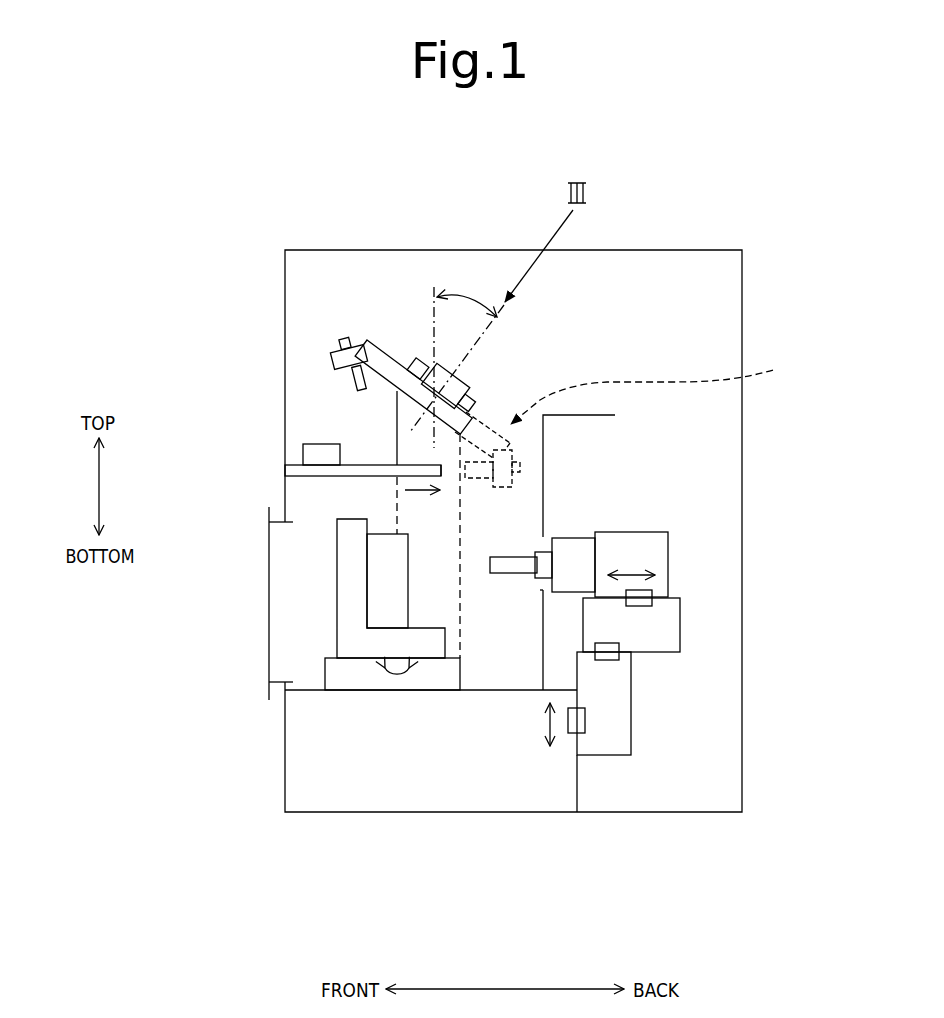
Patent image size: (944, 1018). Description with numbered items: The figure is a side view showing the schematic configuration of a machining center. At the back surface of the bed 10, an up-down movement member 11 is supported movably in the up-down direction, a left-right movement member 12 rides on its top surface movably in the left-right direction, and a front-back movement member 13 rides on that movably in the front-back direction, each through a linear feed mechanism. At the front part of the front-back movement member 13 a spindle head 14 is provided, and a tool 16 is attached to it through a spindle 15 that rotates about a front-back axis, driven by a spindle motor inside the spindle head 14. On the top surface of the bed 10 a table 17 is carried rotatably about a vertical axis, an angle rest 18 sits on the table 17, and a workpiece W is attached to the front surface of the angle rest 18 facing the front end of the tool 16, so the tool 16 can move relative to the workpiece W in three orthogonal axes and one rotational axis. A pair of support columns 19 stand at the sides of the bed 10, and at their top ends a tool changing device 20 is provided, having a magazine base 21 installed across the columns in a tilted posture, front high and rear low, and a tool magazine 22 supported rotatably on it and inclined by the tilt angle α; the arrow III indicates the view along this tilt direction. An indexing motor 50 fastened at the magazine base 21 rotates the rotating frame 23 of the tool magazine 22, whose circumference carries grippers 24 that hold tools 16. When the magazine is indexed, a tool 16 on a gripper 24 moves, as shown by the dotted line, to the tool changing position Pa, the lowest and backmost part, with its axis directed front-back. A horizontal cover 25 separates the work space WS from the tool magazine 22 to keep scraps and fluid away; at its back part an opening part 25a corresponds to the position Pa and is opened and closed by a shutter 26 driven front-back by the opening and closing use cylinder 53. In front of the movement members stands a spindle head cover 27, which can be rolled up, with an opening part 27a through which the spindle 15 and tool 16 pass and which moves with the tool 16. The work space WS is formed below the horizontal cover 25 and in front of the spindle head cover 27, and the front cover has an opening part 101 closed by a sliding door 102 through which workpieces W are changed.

The bed 10 is at (300, 758).
The up-down movement member 11 is at (620, 727).
The left-right movement member 12 is at (665, 630).
The front-back movement member 13 is at (658, 552).
The spindle head 14 is at (545, 553).
The spindle 15 is at (580, 548).
The tool 16 is at (520, 555).
The table 17 is at (333, 675).
The angle rest 18 is at (337, 578).
The support column 19 is at (396, 412).
The tool changing device 20 is at (341, 305).
The magazine base 21 is at (416, 362).
The tool magazine 22 is at (360, 336).
The rotating frame 23 is at (437, 375).
The gripper 24 is at (331, 358).
The horizontal cover 25 is at (298, 478).
The opening part 25a is at (441, 465).
The shutter 26 is at (443, 478).
The spindle head cover 27 is at (543, 620).
The opening part 27a is at (543, 590).
The indexing motor 50 is at (475, 362).
The opening and closing use cylinder 53 is at (313, 455).
The opening part 101 is at (269, 532).
The door 102 is at (269, 648).
The workpiece W is at (387, 581).
The work space WS is at (296, 615).
The tool changing position Pa is at (630, 420).
The arrow III is at (545, 242).